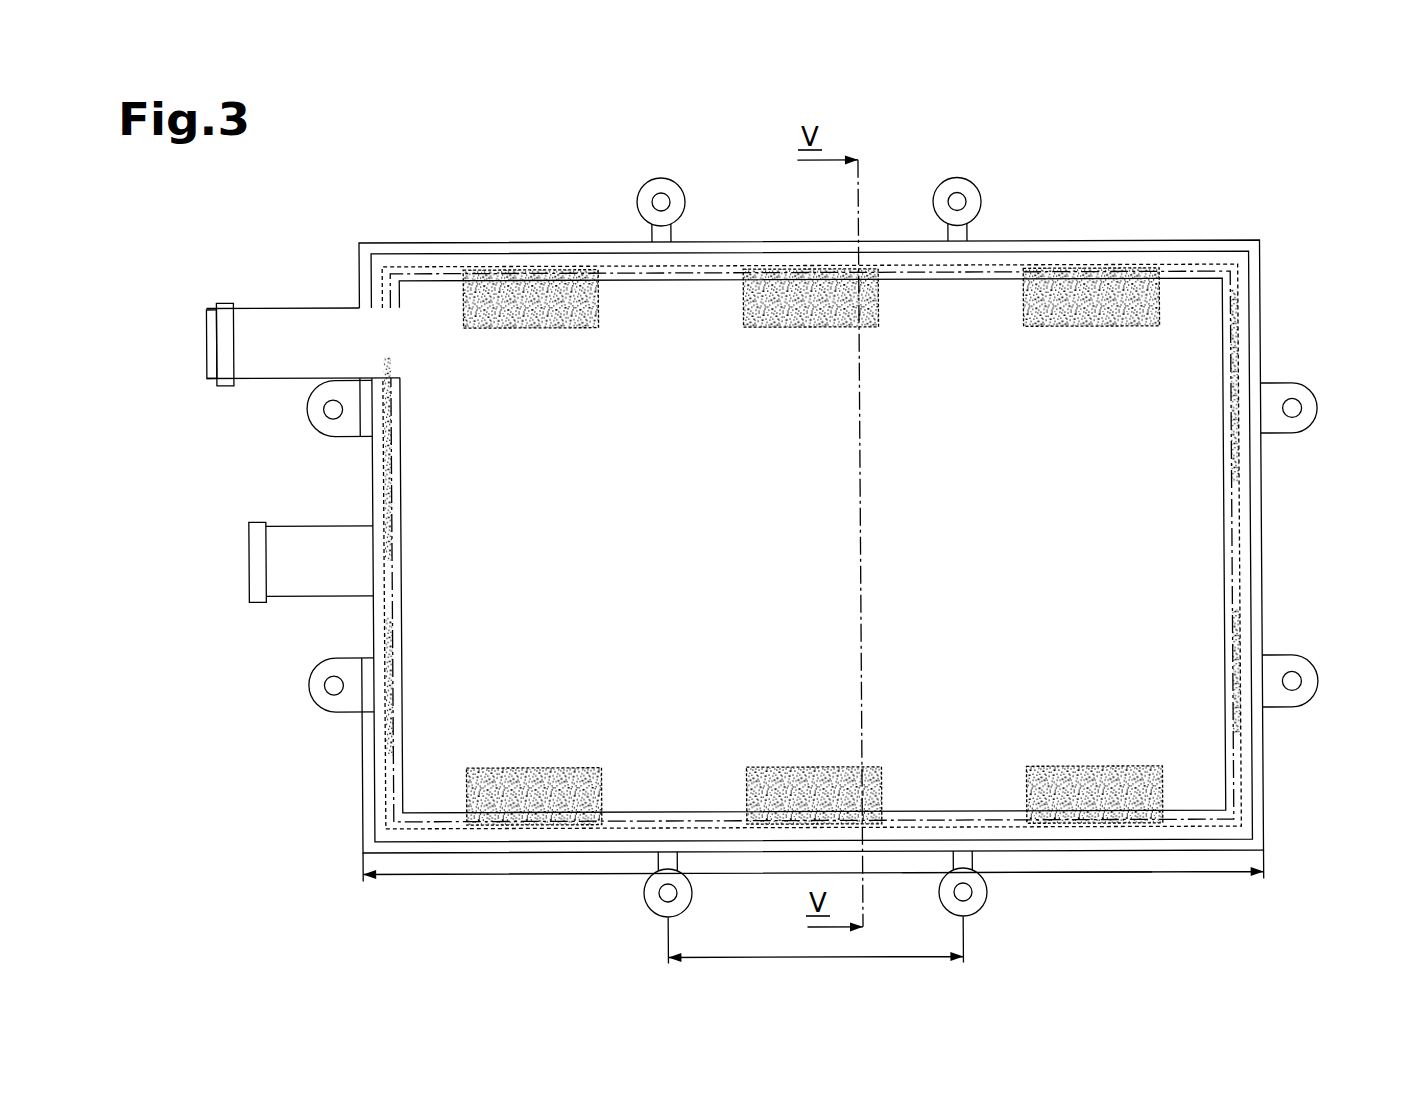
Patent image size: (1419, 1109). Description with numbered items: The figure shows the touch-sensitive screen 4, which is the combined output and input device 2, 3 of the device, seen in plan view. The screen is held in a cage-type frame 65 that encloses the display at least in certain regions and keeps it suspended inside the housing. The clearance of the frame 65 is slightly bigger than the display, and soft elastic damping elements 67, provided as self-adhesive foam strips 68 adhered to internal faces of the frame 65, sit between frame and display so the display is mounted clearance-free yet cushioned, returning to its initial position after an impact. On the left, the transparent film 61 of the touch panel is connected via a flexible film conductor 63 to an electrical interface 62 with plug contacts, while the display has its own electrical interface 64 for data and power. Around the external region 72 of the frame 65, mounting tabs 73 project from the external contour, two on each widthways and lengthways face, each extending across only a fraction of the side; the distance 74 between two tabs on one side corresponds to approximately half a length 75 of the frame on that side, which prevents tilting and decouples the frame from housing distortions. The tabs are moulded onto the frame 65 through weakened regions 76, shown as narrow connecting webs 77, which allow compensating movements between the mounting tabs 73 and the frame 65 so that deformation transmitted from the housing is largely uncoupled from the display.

The output device 2 is at (1193, 358).
The input device 3 is at (1193, 408).
The touch-sensitive screen 4 is at (1212, 210).
The transparent film 61 is at (425, 452).
The electrical interface 62 is at (207, 298).
The film conductor 63 is at (315, 330).
The electrical interface 64 is at (240, 520).
The frame 65 is at (442, 235).
The damping elements 67 is at (767, 300).
The foam strips 68 is at (1042, 302).
The external region 72 is at (1165, 855).
The mounting tabs 73 is at (634, 184).
The distance 74 is at (803, 955).
The length 75 is at (1070, 878).
The weakened regions 76 is at (644, 864).
The connecting webs 77 is at (960, 236).